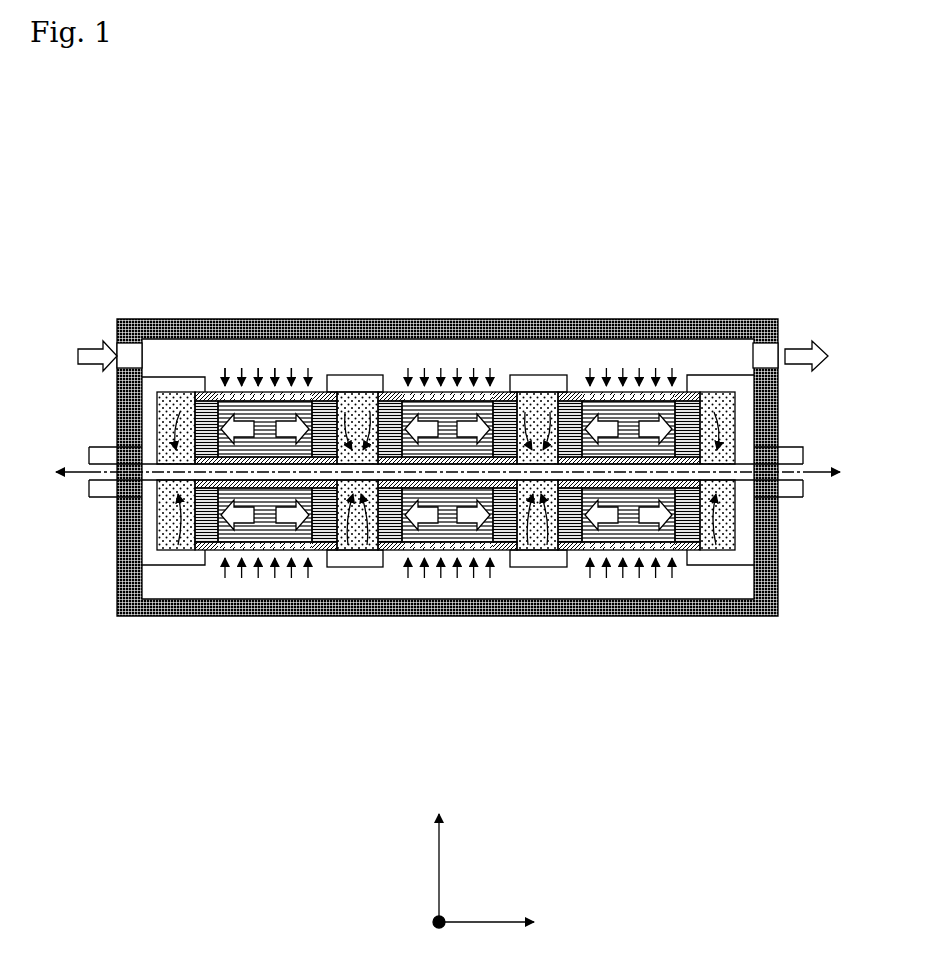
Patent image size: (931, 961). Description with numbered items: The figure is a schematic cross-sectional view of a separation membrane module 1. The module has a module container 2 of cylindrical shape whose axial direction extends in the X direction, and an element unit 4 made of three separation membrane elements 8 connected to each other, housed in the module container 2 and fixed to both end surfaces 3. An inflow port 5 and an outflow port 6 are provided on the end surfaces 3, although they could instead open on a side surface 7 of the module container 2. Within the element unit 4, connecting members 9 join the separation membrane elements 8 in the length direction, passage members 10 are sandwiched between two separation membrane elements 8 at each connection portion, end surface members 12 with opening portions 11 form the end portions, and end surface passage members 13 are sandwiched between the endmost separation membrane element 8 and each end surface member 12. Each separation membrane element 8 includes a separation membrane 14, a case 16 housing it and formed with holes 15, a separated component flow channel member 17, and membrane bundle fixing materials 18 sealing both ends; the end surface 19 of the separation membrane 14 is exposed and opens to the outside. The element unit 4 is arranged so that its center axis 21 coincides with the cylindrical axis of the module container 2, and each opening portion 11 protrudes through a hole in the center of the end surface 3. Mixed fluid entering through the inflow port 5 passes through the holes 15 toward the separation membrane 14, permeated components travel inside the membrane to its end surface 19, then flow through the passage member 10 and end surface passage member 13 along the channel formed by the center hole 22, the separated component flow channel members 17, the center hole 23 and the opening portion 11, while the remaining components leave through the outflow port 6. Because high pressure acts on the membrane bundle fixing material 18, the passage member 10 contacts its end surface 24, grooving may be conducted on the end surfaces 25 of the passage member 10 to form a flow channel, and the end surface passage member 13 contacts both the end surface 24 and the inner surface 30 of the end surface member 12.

The separation membrane module 1 is at (685, 175).
The module container 2 is at (673, 305).
The end surface 3 is at (119, 557).
The element unit 4 is at (392, 357).
The inflow port 5 is at (130, 347).
The outflow port 6 is at (763, 347).
The side surface 7 is at (537, 383).
The separation membrane element 8 is at (452, 355).
The connecting member 9 is at (360, 382).
The passage member 10 is at (343, 400).
The opening portion 11 is at (102, 478).
The end surface member 12 is at (105, 450).
The end surface passage member 13 is at (163, 397).
The separation membrane 14 is at (450, 527).
The hole 15 is at (460, 550).
The case 16 is at (502, 550).
The separated component flow channel member 17 is at (447, 485).
The membrane bundle fixing material 18 is at (383, 542).
The end surface of the separation membrane 19 is at (207, 553).
The center axis 21 is at (255, 470).
The center hole of the passage member 22 is at (327, 553).
The center hole of the end surface passage member 23 is at (160, 548).
The end surface of the membrane bundle fixing material 24 is at (463, 583).
The end surface of the passage member 25 is at (485, 583).
The inner surface of the end surface member 30 is at (160, 518).